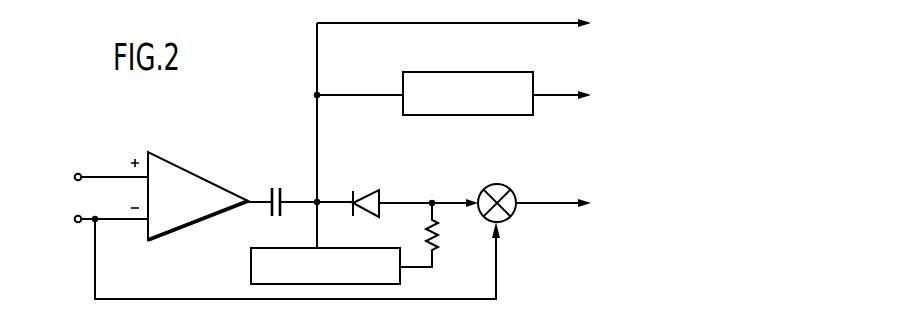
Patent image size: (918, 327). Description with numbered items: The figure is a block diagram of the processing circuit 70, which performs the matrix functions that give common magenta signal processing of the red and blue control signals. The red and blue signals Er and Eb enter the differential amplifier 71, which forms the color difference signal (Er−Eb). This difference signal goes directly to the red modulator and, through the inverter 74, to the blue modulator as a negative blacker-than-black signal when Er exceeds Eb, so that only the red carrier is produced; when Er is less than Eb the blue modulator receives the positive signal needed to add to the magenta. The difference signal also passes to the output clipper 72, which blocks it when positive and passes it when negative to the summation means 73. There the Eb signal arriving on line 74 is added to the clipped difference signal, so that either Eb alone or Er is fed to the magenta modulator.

The processing circuit 70 is at (259, 131).
The differential amplifier 71 is at (211, 166).
The output clipper 72 is at (388, 170).
The summation means 73 is at (481, 190).
The inverter 74 is at (437, 70).